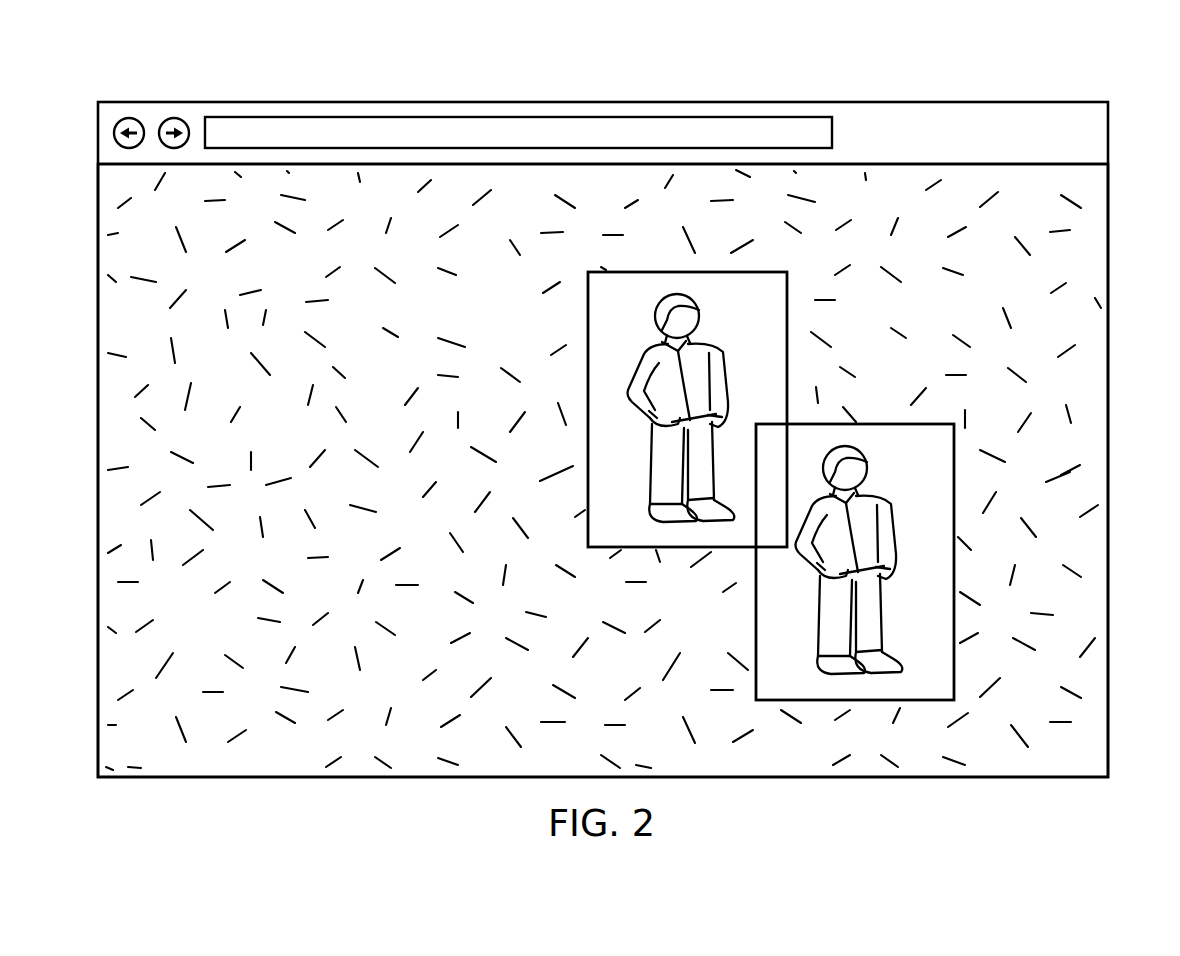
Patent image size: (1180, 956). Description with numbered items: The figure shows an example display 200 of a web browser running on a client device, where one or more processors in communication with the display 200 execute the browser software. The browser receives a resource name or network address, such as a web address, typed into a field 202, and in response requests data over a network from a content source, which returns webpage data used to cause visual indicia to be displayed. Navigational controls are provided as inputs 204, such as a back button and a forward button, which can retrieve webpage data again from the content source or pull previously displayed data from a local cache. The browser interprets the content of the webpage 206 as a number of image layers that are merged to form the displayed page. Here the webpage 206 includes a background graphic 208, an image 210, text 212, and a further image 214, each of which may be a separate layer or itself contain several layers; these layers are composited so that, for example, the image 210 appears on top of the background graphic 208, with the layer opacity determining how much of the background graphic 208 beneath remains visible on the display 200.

The display 200 is at (98, 273).
The field 202 is at (129, 118).
The inputs 204 is at (324, 122).
The webpage 206 is at (120, 413).
The background graphic 208 is at (267, 745).
The image 210 is at (755, 393).
The text 212 is at (512, 293).
The image 214 is at (925, 546).